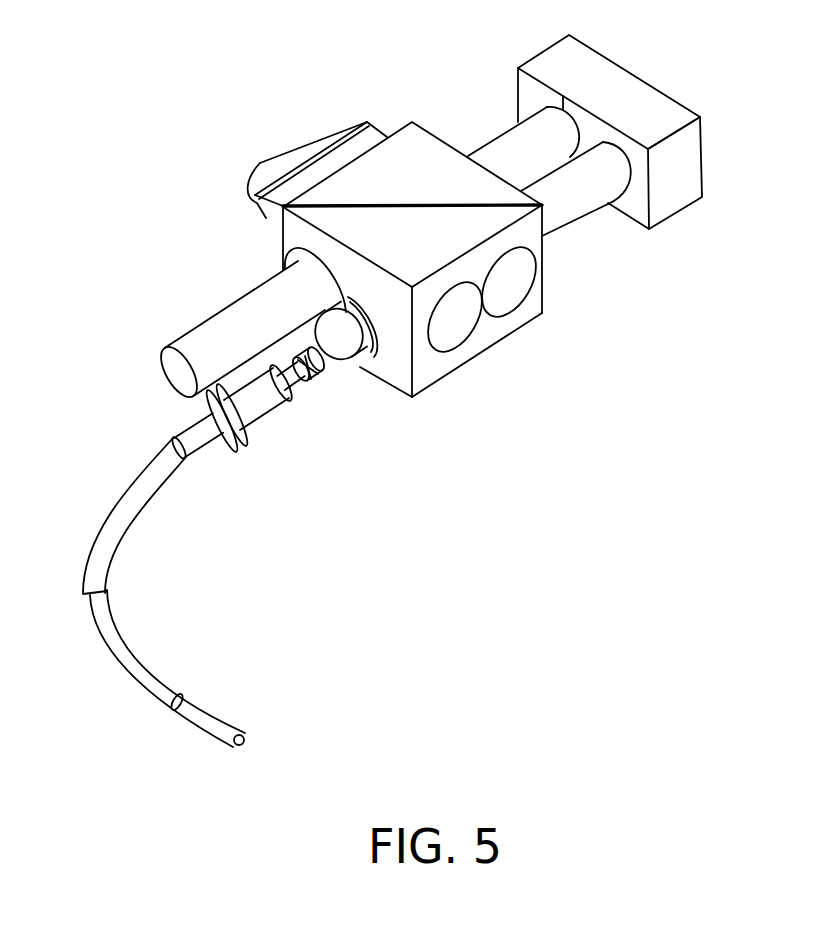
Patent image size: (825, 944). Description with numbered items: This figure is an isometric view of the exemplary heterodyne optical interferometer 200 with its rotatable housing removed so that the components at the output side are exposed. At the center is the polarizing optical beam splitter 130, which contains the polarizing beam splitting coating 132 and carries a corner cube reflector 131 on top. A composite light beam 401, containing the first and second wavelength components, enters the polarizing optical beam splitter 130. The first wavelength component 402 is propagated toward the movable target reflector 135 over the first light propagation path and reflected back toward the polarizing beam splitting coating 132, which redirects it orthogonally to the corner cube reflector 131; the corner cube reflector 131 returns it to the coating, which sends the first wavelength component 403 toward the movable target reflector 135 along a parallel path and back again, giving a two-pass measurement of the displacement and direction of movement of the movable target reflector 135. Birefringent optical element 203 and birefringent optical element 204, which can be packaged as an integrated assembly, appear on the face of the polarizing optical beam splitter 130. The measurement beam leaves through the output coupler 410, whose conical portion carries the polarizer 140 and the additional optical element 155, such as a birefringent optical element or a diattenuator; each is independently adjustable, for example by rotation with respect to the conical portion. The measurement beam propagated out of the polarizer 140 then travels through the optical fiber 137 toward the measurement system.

The heterodyne optical interferometer 200 is at (672, 548).
The polarizing optical beam splitter 130 is at (438, 184).
The corner cube reflector 131 is at (302, 148).
The polarizing beam splitting coating 132 is at (432, 208).
The movable target reflector 135 is at (635, 108).
The optical fiber 137 is at (131, 503).
The polarizer 140 is at (317, 377).
The additional optical element 155 is at (320, 372).
The birefringent optical element 203 is at (517, 308).
The birefringent optical element 204 is at (463, 345).
The composite light beam 401 is at (205, 320).
The first wavelength component 402 is at (508, 127).
The first wavelength component 403 is at (567, 227).
The output coupler 410 is at (358, 364).